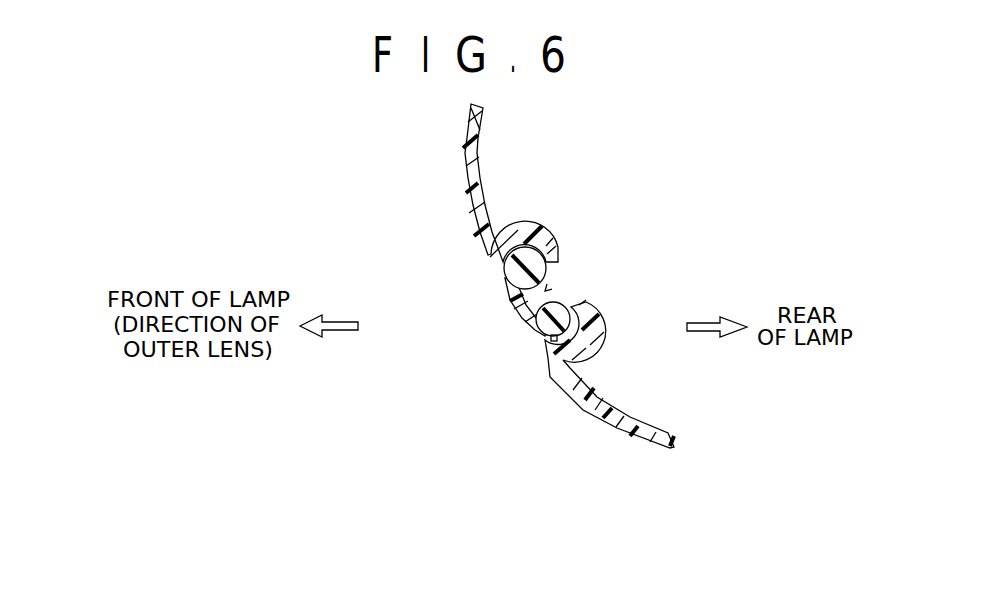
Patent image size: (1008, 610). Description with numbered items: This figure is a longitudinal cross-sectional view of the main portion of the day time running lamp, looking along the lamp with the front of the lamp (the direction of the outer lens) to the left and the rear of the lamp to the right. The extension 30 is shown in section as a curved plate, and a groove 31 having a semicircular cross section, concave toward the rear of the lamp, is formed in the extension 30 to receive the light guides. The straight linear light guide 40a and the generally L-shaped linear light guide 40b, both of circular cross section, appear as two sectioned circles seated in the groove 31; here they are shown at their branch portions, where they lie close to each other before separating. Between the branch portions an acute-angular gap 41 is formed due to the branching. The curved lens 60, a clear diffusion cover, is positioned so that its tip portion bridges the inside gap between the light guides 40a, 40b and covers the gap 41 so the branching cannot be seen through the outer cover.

The extension 30 is at (462, 169).
The groove 31 is at (520, 247).
The straight linear light guide 40a is at (503, 267).
The generally L-shaped linear light guide 40b is at (540, 334).
The acute-angular gap 41 is at (547, 290).
The curved lens 60 is at (512, 308).